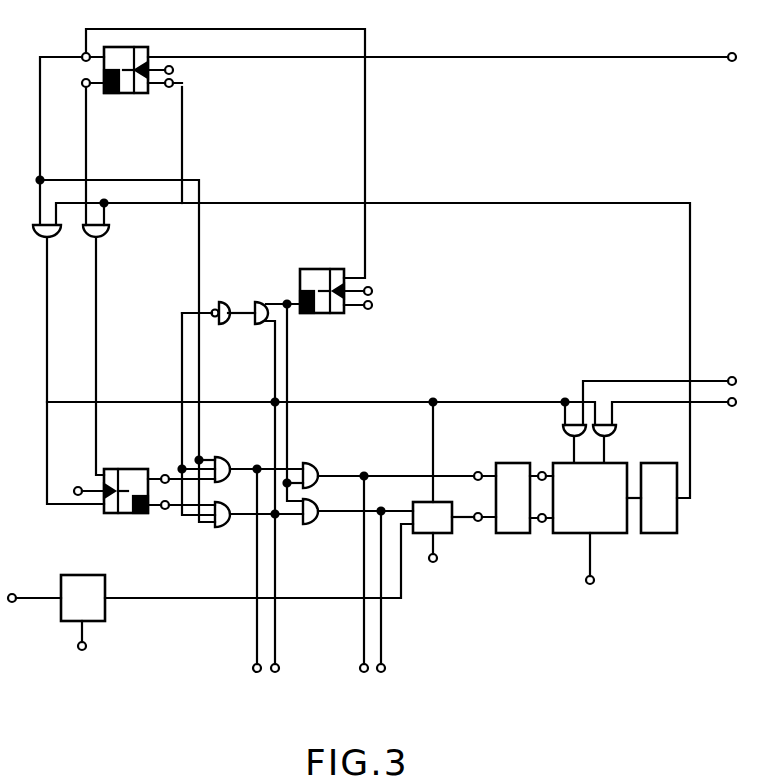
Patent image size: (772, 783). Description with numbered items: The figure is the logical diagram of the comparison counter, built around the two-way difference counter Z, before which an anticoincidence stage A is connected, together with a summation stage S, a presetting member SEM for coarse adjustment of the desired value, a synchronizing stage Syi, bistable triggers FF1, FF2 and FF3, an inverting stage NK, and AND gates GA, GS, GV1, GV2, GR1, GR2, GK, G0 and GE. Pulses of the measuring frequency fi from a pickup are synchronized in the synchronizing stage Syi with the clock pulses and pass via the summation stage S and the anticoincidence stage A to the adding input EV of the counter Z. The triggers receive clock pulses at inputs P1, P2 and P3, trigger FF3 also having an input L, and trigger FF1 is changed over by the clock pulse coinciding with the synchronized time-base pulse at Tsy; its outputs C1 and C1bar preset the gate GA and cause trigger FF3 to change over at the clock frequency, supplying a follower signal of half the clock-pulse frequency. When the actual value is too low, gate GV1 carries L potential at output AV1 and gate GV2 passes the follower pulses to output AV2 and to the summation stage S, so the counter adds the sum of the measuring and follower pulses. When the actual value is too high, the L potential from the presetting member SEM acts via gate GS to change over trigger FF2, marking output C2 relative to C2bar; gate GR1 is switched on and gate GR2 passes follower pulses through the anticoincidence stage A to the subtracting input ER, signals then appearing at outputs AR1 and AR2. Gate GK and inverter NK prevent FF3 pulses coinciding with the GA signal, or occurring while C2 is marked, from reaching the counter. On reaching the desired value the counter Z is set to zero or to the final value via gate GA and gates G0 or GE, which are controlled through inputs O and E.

The bistable trigger FF1 is at (138, 89).
The bistable trigger FF2 is at (121, 509).
The bistable trigger FF3 is at (336, 309).
The AND gate GA is at (40, 246).
The AND gate GS is at (107, 246).
The AND gate GK is at (260, 295).
The inverting stage NK is at (227, 331).
The AND gate GR1 is at (228, 458).
The AND gate GR2 is at (316, 463).
The AND gate GV1 is at (232, 530).
The AND gate GV2 is at (310, 523).
The summation stage S is at (432, 547).
The anticoincidence stage A is at (502, 498).
The two-way counter Z is at (590, 538).
The presetting member SEM is at (677, 509).
The synchronizing stage Syi is at (83, 626).
The AND gate G0 is at (558, 426).
The AND gate GE is at (622, 427).
The output of trigger FF1 C1 is at (73, 82).
The inverted output of trigger FF1 C1bar is at (73, 27).
The output of trigger FF2 C2 is at (164, 457).
The inverted output of trigger FF2 C2bar is at (170, 513).
The clock-pulse input P1 is at (191, 70).
The clock-pulse input P2 is at (56, 492).
The clock-pulse input P3 is at (399, 287).
The L potential input L is at (400, 312).
The synchronized time-base pulse input Tsy is at (719, 75).
The input 0 O is at (727, 366).
The input E is at (725, 418).
The subtracting input ER is at (541, 471).
The adding input EV is at (540, 523).
The measuring frequency fi is at (12, 615).
The output of gate GR1 AR1 is at (254, 672).
The output of gate GV1 AV1 is at (277, 672).
The output of gate GR2 AR2 is at (361, 672).
The output of gate GV2 AV2 is at (383, 672).